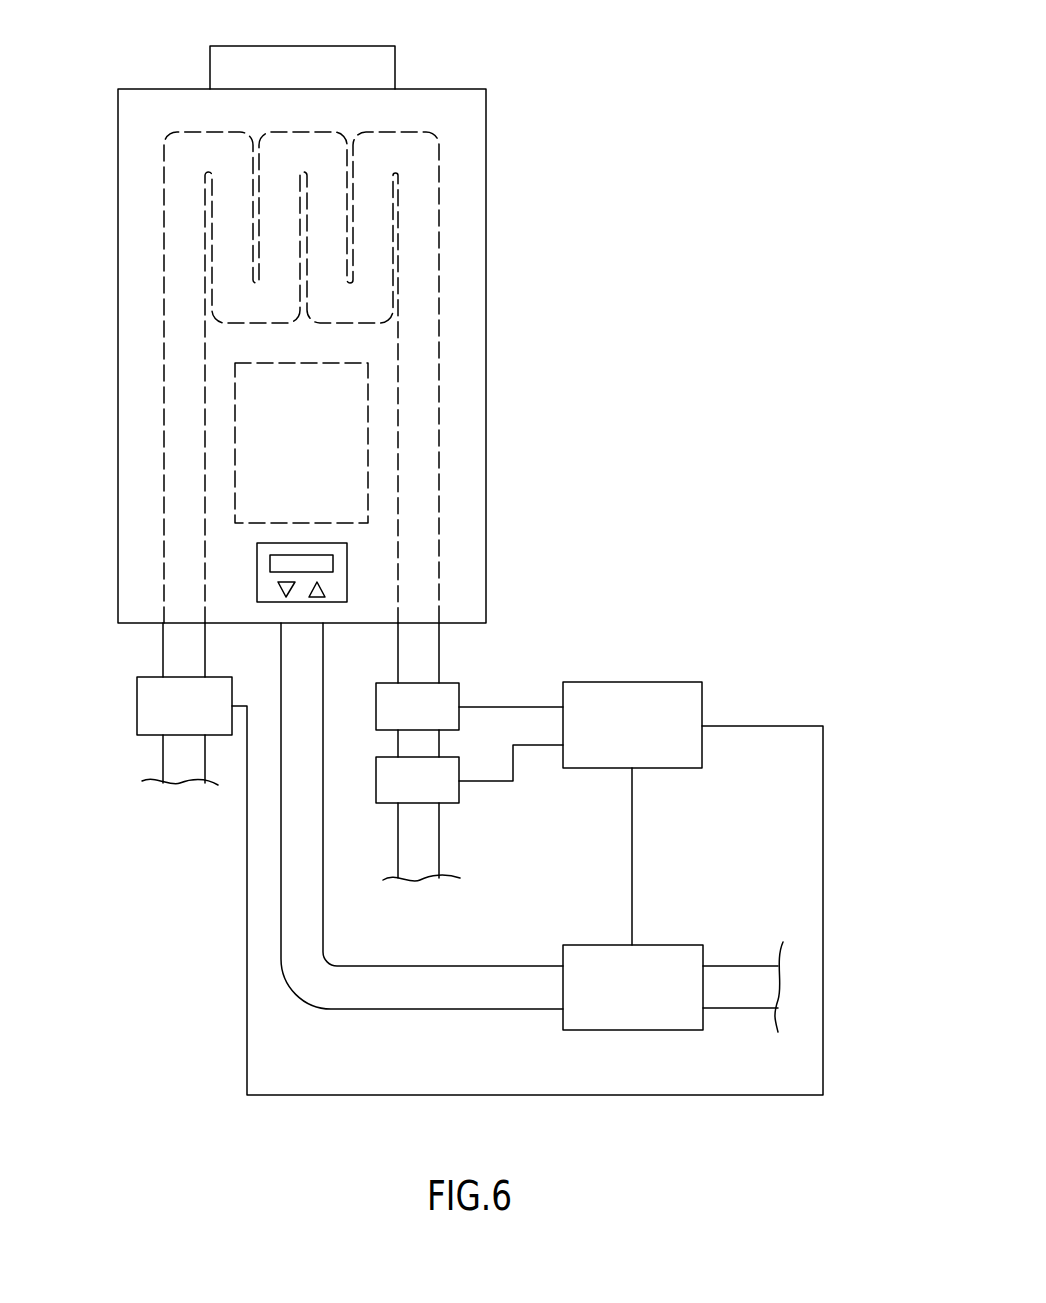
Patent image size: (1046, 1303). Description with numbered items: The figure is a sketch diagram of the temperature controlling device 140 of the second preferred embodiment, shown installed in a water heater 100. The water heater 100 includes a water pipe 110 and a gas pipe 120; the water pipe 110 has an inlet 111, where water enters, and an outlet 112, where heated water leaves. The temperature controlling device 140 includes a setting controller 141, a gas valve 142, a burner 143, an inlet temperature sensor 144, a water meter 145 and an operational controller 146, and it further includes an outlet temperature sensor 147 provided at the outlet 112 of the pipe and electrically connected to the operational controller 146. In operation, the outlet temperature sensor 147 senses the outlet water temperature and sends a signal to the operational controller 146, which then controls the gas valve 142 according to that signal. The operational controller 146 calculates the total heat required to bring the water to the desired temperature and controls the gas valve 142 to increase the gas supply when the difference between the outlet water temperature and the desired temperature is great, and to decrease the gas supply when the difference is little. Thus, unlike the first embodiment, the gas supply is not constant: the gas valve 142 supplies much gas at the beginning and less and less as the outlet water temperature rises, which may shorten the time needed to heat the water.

The water heater 100 is at (630, 55).
The water pipe 110 is at (422, 237).
The inlet 111 is at (420, 659).
The outlet 112 is at (175, 653).
The gas pipe 120 is at (305, 978).
The temperature controlling device 140 is at (690, 612).
The setting controller 141 is at (332, 580).
The gas valve 142 is at (653, 1013).
The burner 143 is at (346, 418).
The inlet temperature sensor 144 is at (408, 698).
The water meter 145 is at (408, 772).
The operational controller 146 is at (688, 708).
The outlet temperature sensor 147 is at (148, 727).